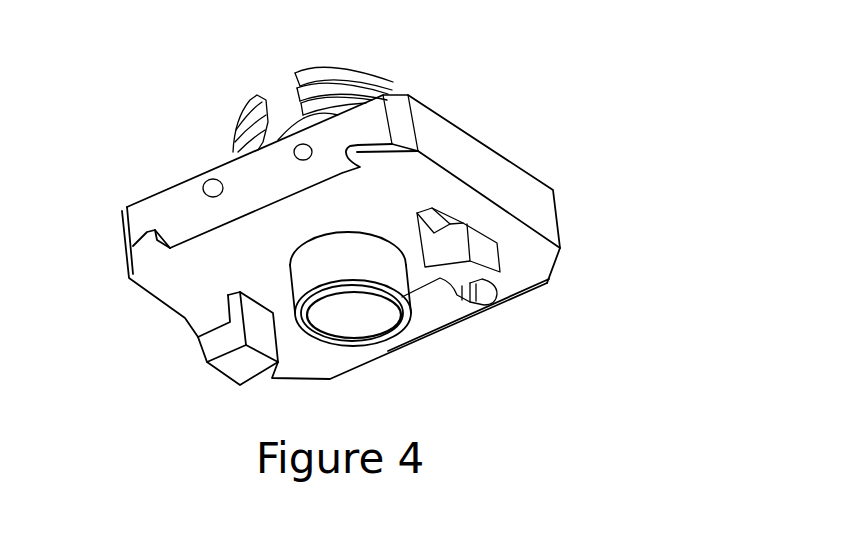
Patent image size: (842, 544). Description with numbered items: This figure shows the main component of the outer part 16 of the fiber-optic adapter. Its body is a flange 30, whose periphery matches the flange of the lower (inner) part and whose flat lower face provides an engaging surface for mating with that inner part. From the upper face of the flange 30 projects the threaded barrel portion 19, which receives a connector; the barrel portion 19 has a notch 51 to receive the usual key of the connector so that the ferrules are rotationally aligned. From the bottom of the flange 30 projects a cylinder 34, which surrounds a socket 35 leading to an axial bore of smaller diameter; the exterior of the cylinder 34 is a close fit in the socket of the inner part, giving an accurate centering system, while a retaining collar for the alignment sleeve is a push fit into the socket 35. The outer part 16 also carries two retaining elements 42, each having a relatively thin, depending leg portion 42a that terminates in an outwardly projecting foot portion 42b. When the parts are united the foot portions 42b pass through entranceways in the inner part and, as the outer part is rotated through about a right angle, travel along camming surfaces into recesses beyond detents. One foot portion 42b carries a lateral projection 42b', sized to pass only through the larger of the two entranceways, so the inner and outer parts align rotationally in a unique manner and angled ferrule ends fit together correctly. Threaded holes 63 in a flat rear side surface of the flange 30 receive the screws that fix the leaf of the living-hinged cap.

The outer part 16 is at (178, 272).
The threaded barrel portion 19 is at (365, 70).
The flange 30 is at (478, 160).
The cylinder 34 is at (405, 288).
The socket 35 is at (378, 327).
The retaining elements 42 is at (235, 370).
The leg portion 42a is at (443, 225).
The foot portion 42b is at (547, 294).
The lateral projection 42b' is at (539, 332).
The notch 51 is at (293, 72).
The threaded holes 63 is at (270, 143).